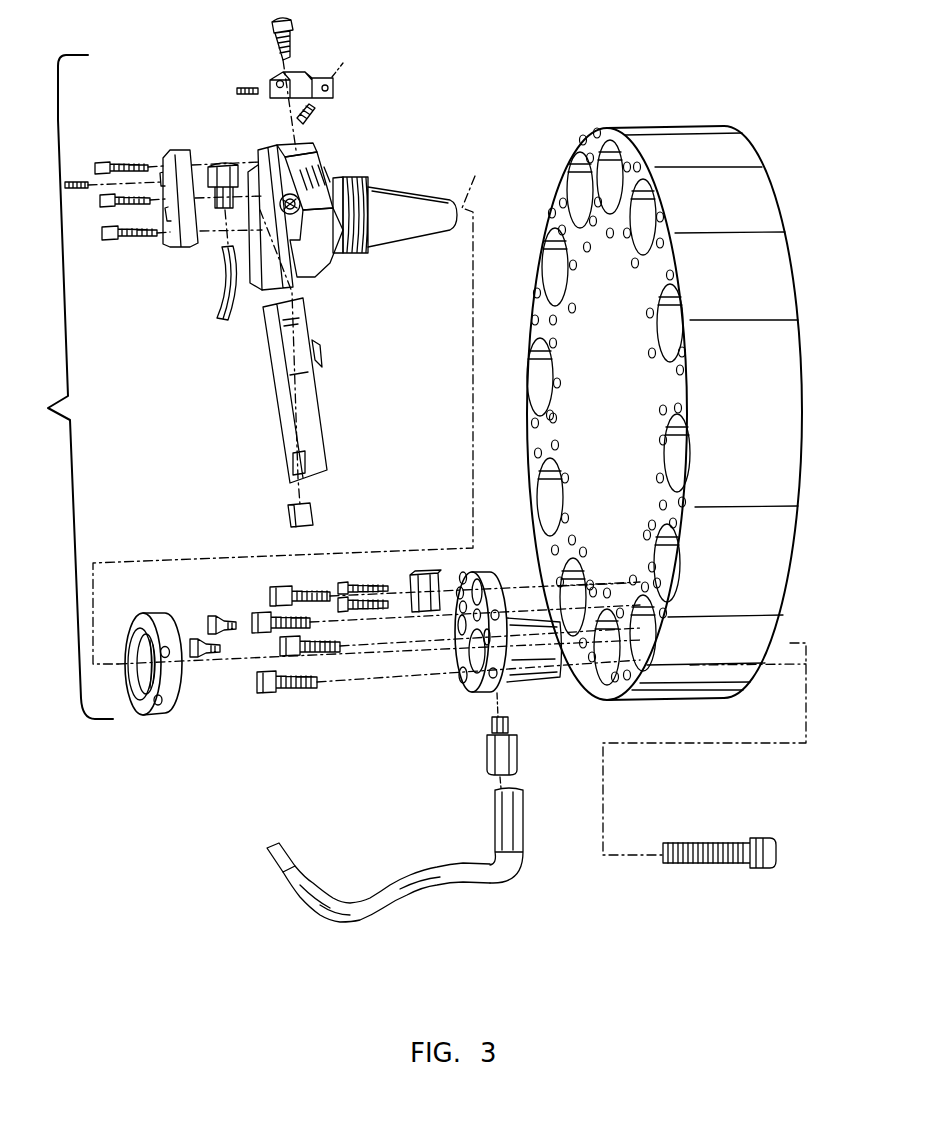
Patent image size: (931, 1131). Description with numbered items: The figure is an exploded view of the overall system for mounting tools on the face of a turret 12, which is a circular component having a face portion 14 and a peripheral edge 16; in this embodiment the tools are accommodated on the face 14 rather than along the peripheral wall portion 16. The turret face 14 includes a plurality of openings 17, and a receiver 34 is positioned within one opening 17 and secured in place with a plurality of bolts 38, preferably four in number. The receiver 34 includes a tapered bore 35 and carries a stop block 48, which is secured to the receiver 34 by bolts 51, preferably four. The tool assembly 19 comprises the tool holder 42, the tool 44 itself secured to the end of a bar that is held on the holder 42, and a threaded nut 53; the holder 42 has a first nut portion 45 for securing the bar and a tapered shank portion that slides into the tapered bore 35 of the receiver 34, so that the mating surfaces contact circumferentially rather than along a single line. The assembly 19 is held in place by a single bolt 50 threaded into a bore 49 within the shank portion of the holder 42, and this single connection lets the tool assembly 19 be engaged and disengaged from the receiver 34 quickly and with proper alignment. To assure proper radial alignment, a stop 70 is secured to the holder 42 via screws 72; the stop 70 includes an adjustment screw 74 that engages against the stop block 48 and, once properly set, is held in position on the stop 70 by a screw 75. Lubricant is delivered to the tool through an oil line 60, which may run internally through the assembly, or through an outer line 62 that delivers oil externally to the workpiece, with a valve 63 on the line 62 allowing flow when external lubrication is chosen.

The turret 12 is at (671, 407).
The face portion 14 is at (575, 238).
The peripheral edge 16 is at (766, 425).
The openings 17 is at (645, 124).
The tool assembly 19 is at (67, 387).
The receiver 34 is at (470, 628).
The tapered bore 35 is at (470, 660).
The bolts 38 is at (272, 590).
The tool holder 42 is at (372, 174).
The tool 44 is at (313, 512).
The first nut portion 45 is at (310, 420).
The stop block 48 is at (432, 574).
The bore 49 is at (284, 408).
The bolt 50 is at (700, 862).
The bolts 51 is at (345, 584).
The threaded nut 53 is at (170, 678).
The oil line 60 is at (493, 685).
The outer line 62 is at (374, 910).
The valve 63 is at (525, 826).
The stop 70 is at (304, 84).
The screws 72 is at (268, 44).
The adjustment screw 74 is at (318, 112).
The screw 75 is at (250, 95).